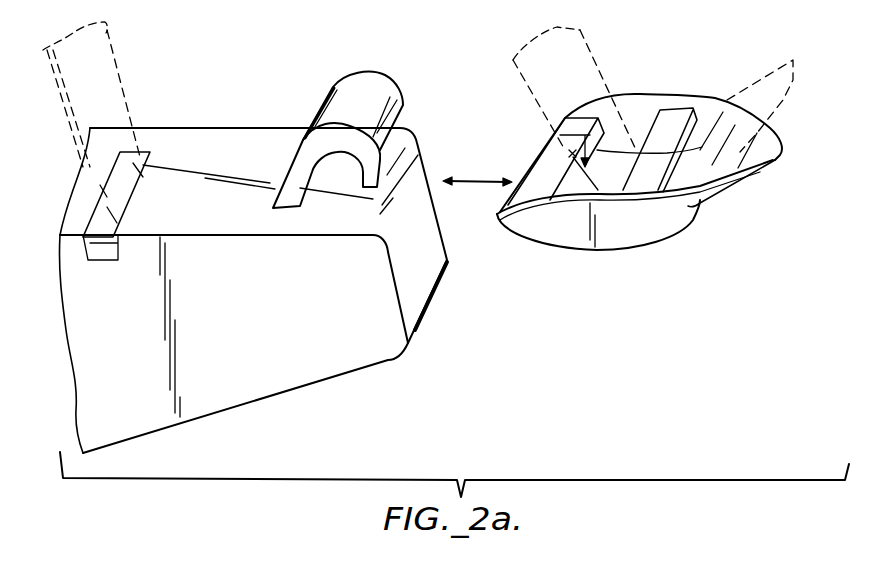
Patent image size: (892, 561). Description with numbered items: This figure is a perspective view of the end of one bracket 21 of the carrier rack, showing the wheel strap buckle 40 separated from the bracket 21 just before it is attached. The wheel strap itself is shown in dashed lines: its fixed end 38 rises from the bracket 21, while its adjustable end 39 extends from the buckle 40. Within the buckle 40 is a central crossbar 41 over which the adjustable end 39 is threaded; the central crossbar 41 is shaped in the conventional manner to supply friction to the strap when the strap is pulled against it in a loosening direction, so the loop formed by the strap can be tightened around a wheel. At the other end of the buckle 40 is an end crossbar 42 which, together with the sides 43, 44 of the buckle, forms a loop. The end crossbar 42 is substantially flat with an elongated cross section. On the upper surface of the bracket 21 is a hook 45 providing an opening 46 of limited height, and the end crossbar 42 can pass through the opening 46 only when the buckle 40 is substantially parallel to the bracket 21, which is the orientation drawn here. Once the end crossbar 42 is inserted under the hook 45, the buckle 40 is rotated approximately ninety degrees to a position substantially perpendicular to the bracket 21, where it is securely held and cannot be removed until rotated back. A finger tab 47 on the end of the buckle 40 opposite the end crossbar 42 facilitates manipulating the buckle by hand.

The bracket 21 is at (273, 363).
The fixed end 38 is at (103, 68).
The adjustable end 39 is at (752, 88).
The buckle 40 is at (656, 162).
The central crossbar 41 is at (673, 120).
The end crossbar 42 is at (548, 163).
The side 43 is at (613, 110).
The side 44 is at (580, 233).
The hook 45 is at (367, 87).
The opening 46 is at (390, 192).
The finger tab 47 is at (777, 163).